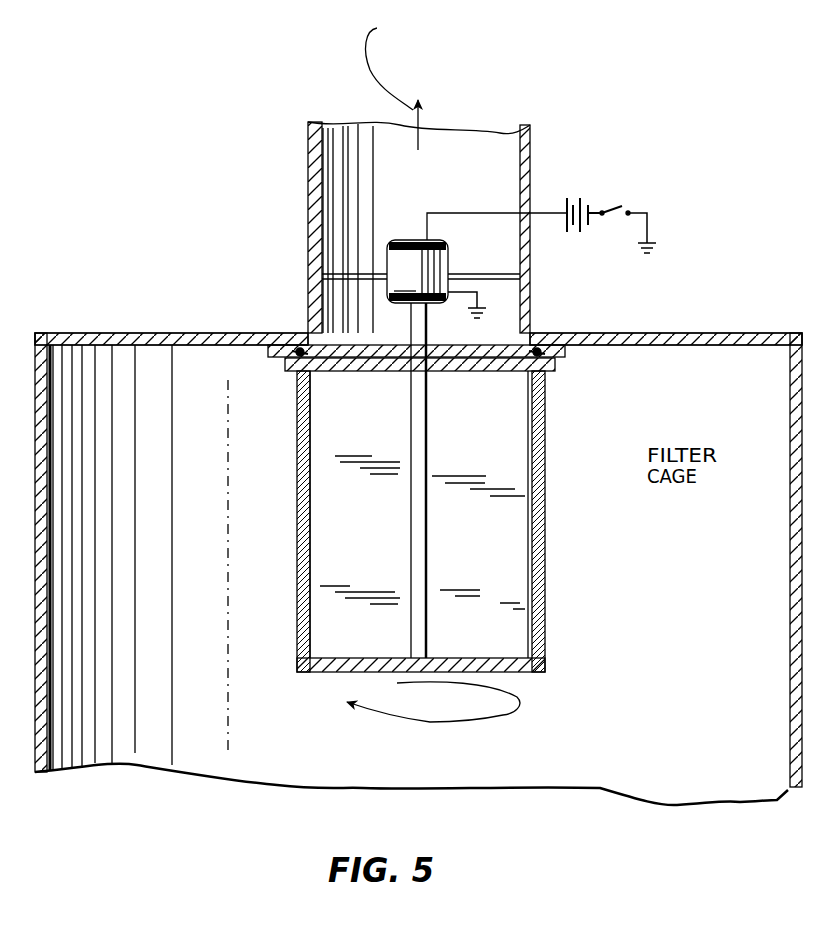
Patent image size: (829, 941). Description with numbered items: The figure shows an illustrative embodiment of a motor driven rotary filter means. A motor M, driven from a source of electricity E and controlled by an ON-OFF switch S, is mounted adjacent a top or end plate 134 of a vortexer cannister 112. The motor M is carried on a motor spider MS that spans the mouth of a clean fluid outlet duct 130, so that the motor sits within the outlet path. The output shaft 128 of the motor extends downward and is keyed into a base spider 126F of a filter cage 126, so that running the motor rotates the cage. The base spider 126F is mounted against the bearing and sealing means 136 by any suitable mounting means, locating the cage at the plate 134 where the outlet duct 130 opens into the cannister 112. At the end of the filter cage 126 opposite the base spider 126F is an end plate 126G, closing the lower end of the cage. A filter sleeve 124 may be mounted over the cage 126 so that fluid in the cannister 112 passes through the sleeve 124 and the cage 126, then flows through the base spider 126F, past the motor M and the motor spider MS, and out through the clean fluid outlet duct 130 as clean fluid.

The vortexer cannister 112 is at (212, 522).
The filter sleeve 124 is at (298, 568).
The filter cage 126 is at (473, 543).
The base spider 126F is at (463, 371).
The end plate 126G is at (517, 672).
The output shaft 128 is at (403, 327).
The clean fluid outlet duct 130 is at (531, 160).
The top or end plate 134 is at (228, 333).
The bearing and sealing means 136 is at (563, 357).
The motor spider MS is at (353, 273).
The source of electricity E is at (585, 197).
The ON-OFF switch S is at (622, 209).